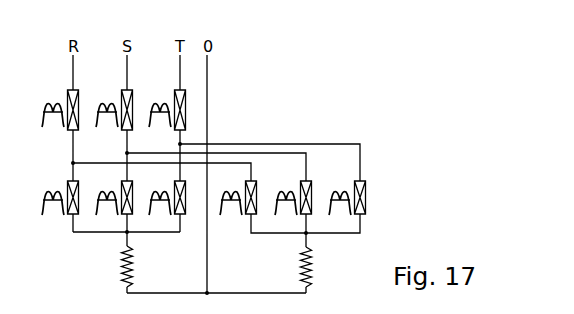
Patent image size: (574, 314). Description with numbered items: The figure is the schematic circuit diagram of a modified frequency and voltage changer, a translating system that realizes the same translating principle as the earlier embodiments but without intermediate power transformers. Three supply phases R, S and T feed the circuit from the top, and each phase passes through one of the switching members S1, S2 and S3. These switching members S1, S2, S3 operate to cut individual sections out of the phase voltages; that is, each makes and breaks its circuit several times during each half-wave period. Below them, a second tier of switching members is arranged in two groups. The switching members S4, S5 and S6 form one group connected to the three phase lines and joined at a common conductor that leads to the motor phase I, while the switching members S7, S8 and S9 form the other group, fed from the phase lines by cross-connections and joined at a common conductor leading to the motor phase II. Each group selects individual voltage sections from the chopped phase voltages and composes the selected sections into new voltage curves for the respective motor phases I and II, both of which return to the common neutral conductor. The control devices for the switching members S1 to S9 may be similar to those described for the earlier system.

The switching member S1 is at (69, 131).
The switching member S2 is at (123, 131).
The switching member S3 is at (176, 131).
The switching member S4 is at (79, 210).
The switching member S5 is at (132, 210).
The switching member S6 is at (185, 208).
The switching member S7 is at (257, 210).
The switching member S8 is at (311, 210).
The switching member S9 is at (365, 209).
The motor phase I is at (134, 266).
The motor phase II is at (317, 267).